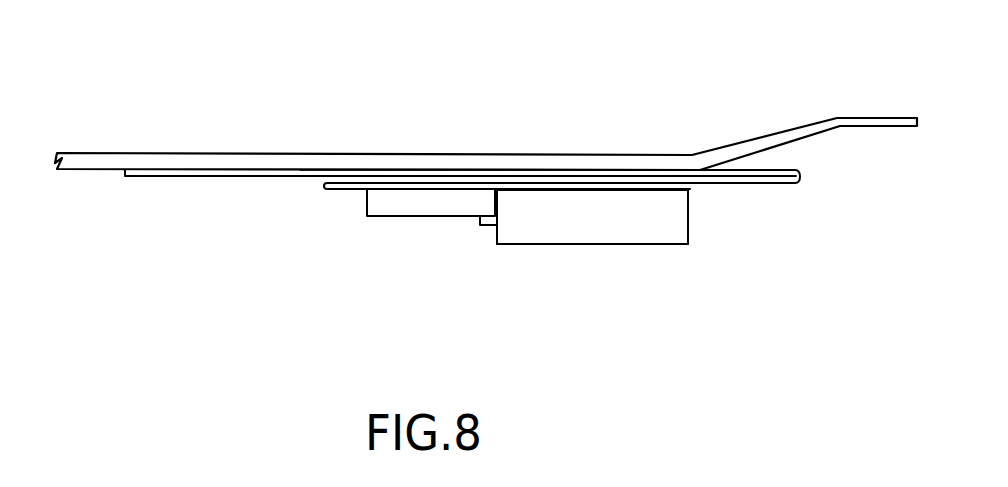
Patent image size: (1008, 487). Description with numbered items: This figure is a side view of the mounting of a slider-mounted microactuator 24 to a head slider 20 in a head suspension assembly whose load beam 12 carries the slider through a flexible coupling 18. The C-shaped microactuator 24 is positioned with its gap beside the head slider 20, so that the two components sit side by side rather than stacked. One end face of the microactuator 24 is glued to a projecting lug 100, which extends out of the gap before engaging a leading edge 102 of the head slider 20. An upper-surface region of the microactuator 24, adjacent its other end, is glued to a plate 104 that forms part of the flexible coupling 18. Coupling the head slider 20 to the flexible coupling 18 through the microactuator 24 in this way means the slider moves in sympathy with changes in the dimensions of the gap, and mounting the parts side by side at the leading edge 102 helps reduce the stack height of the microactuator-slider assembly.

The load beam 12 is at (240, 154).
The flexible coupling 18 is at (538, 168).
The head slider 20 is at (555, 245).
The slider-mounted microactuator 24 is at (378, 217).
The projecting lug 100 is at (479, 226).
The leading edge 102 is at (498, 246).
The plate 104 is at (697, 187).